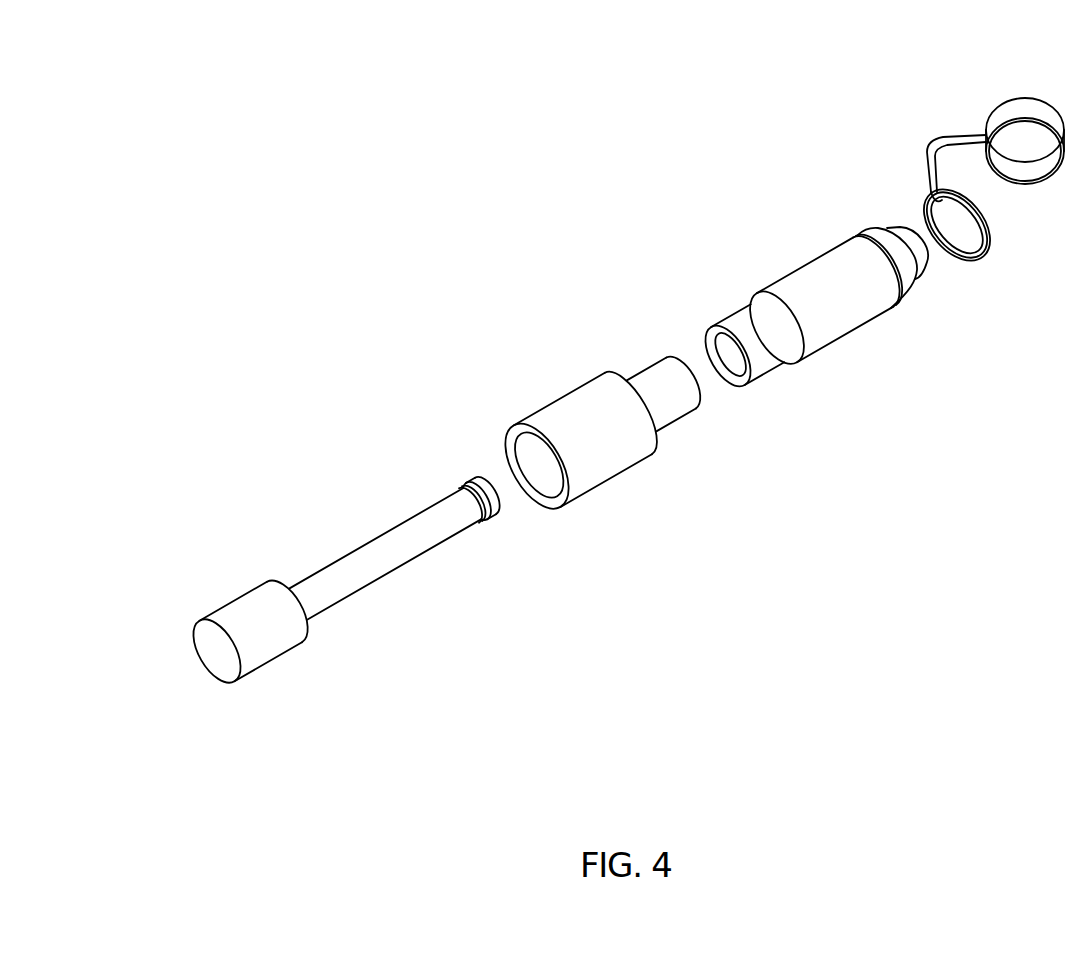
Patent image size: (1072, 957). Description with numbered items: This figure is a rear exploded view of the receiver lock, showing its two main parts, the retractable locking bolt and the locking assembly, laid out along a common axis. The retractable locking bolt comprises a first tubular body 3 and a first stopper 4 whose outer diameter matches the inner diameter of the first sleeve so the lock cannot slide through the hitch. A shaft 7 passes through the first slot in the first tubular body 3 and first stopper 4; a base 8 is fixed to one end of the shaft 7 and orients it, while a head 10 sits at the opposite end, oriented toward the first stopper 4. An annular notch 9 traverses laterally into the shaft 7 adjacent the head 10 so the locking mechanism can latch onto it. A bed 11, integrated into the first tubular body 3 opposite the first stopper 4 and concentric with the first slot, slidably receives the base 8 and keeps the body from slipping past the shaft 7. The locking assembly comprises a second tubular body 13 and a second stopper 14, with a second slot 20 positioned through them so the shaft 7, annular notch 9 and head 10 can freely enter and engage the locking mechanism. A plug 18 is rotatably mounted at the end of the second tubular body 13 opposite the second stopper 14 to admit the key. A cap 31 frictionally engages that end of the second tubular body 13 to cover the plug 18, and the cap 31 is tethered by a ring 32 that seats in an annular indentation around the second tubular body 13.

The first tubular body 3 is at (612, 467).
The first stopper 4 is at (685, 412).
The shaft 7 is at (361, 587).
The base 8 is at (203, 645).
The annular notch 9 is at (462, 487).
The head 10 is at (490, 513).
The bed 11 is at (552, 487).
The second tubular body 13 is at (753, 302).
The second stopper 14 is at (718, 330).
The plug 18 is at (918, 267).
The second slot 20 is at (733, 356).
The cap 31 is at (988, 124).
The ring 32 is at (920, 205).